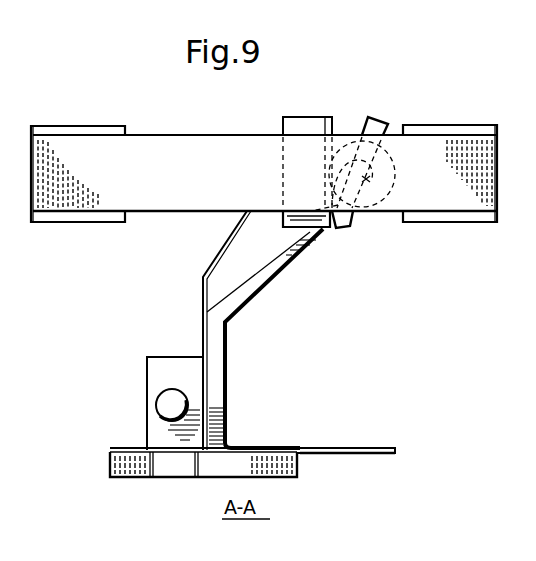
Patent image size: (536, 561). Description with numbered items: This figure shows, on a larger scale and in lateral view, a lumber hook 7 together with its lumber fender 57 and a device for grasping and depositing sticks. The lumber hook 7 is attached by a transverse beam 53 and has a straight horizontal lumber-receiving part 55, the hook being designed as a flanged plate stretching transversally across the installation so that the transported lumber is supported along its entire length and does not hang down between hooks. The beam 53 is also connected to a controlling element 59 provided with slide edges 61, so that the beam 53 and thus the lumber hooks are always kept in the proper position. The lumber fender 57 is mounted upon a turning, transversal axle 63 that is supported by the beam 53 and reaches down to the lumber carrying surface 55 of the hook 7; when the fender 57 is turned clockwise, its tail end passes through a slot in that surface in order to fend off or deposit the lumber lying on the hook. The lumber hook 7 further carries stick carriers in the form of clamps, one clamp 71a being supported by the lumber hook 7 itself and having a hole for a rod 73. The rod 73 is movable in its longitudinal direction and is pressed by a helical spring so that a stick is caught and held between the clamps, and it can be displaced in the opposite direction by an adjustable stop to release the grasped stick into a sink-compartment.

The slide edges 61 is at (63, 128).
The controlling element 59 is at (172, 157).
The transverse beam 53 is at (262, 158).
The turning transversal axle 63 is at (366, 180).
The lumber fender 57 is at (222, 362).
The rod 73 is at (168, 406).
The lumber hook 7 is at (255, 448).
The lumber-receiving part 55 is at (363, 448).
The clamp 71a is at (175, 462).